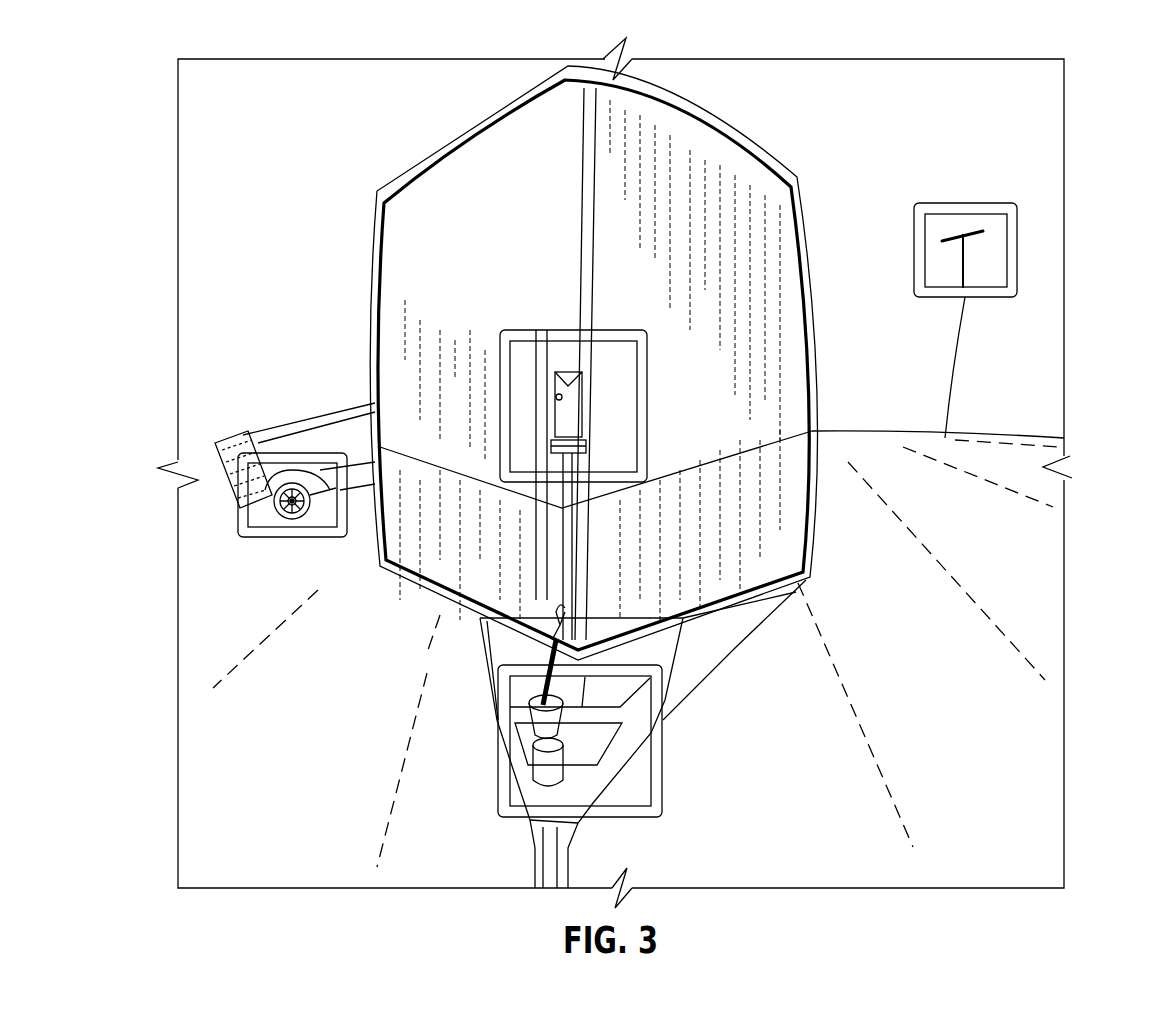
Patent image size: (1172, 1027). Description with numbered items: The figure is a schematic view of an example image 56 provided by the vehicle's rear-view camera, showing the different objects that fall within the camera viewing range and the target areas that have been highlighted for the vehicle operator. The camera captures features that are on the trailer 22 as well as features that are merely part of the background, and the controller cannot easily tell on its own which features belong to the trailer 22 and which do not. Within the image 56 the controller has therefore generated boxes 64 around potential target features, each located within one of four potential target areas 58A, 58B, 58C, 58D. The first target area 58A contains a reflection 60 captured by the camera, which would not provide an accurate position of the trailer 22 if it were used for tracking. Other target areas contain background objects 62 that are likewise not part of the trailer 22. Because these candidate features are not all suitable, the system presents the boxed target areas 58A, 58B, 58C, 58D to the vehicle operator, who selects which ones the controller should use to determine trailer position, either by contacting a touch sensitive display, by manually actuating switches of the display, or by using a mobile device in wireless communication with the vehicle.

The trailer 22 is at (790, 495).
The image 56 is at (1080, 70).
The target area 58A is at (565, 454).
The target area 58B is at (238, 515).
The target area 58C is at (660, 806).
The target area 58D is at (1018, 224).
The reflection 60 is at (531, 386).
The background objects 62 is at (290, 478).
The boxes 64 is at (638, 432).